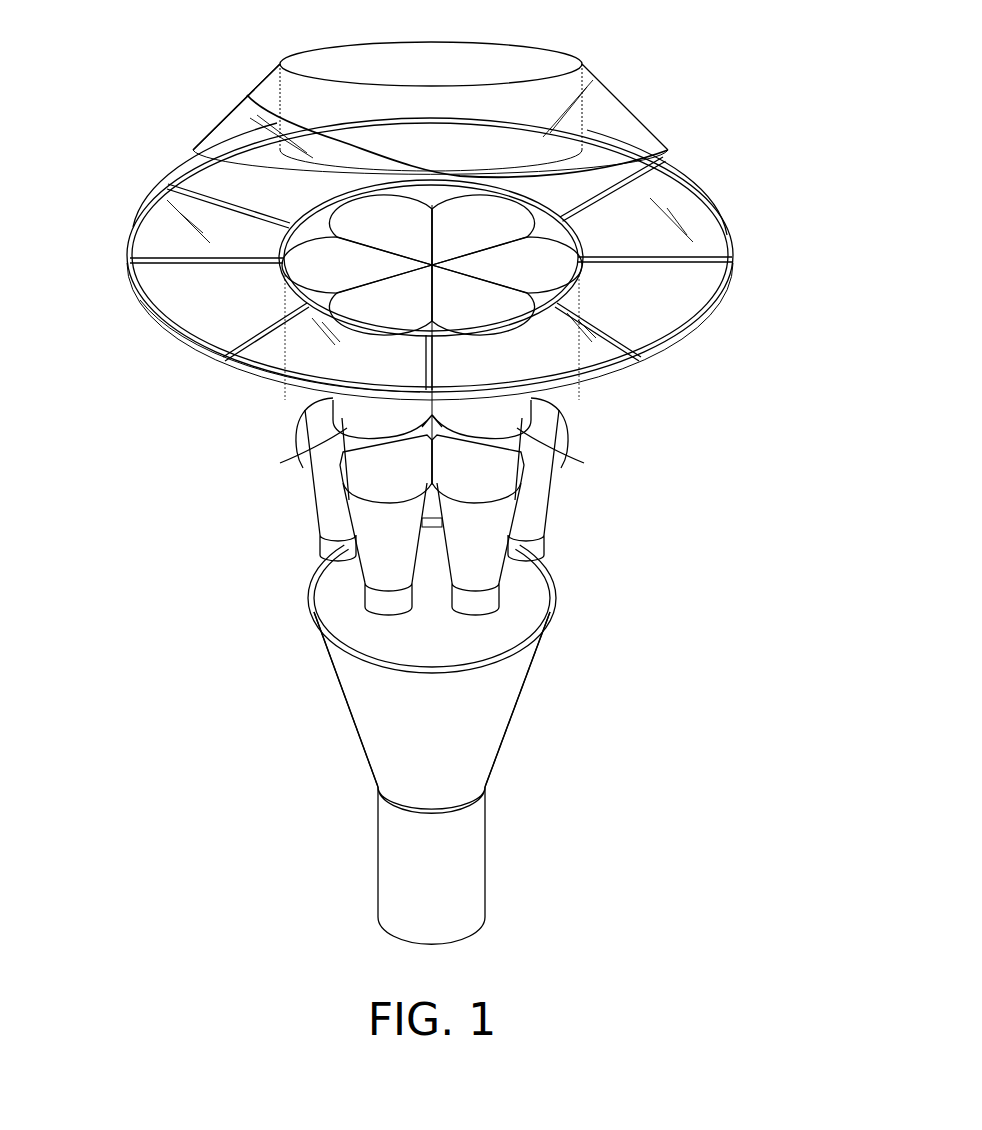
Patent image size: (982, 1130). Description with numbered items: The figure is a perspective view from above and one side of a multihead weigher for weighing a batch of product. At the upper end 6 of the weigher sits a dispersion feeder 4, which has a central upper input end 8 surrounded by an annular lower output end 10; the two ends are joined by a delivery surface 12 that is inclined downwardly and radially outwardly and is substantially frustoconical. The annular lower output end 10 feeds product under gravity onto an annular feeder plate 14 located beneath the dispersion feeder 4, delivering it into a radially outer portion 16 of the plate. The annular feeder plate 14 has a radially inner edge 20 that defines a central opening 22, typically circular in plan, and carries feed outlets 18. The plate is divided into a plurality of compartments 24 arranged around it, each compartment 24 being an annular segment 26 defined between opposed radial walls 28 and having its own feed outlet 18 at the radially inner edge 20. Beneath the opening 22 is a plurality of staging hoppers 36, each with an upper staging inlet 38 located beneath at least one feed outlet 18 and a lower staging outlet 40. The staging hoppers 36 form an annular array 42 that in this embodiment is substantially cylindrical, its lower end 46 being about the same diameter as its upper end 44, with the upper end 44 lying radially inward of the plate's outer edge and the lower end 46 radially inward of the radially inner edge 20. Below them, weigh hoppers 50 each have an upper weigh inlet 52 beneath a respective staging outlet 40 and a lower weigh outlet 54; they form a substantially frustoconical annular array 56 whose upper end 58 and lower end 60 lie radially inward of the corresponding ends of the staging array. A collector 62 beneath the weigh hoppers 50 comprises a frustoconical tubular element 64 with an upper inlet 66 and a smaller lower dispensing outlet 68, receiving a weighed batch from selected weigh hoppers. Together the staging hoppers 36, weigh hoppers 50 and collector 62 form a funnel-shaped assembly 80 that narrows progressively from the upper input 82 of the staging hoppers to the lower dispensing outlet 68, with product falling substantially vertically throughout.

The dispersion feeder 4 is at (226, 127).
The upper end 6 is at (655, 80).
The central upper input end 8 is at (515, 62).
The annular lower output end 10 is at (192, 152).
The delivery surface 12 is at (650, 135).
The annular feeder plate 14 is at (732, 228).
The radially outer portion 16 is at (716, 206).
The feed outlet 18 is at (592, 244).
The radially inner edge 20 is at (205, 158).
The central opening 22 is at (247, 95).
The compartment 24 is at (142, 242).
The annular segment 26 is at (676, 318).
The radial wall 28 is at (690, 302).
The staging hopper 36 is at (347, 433).
The upper staging inlet 38 is at (640, 362).
The lower staging outlet 40 is at (558, 450).
The annular array 42 is at (333, 413).
The upper end 44 is at (578, 186).
The lower end 46 is at (342, 485).
The weigh hopper 50 is at (535, 515).
The upper weigh inlet 52 is at (322, 542).
The lower weigh outlet 54 is at (342, 662).
The annular array 56 is at (483, 572).
The upper end 58 is at (560, 402).
The lower end 60 is at (523, 668).
The collector 62 is at (520, 687).
The tubular element 64 is at (362, 708).
The upper inlet 66 is at (553, 587).
The lower dispensing outlet 68 is at (488, 783).
The funnel-shaped assembly 80 is at (282, 633).
The upper input 82 is at (277, 277).